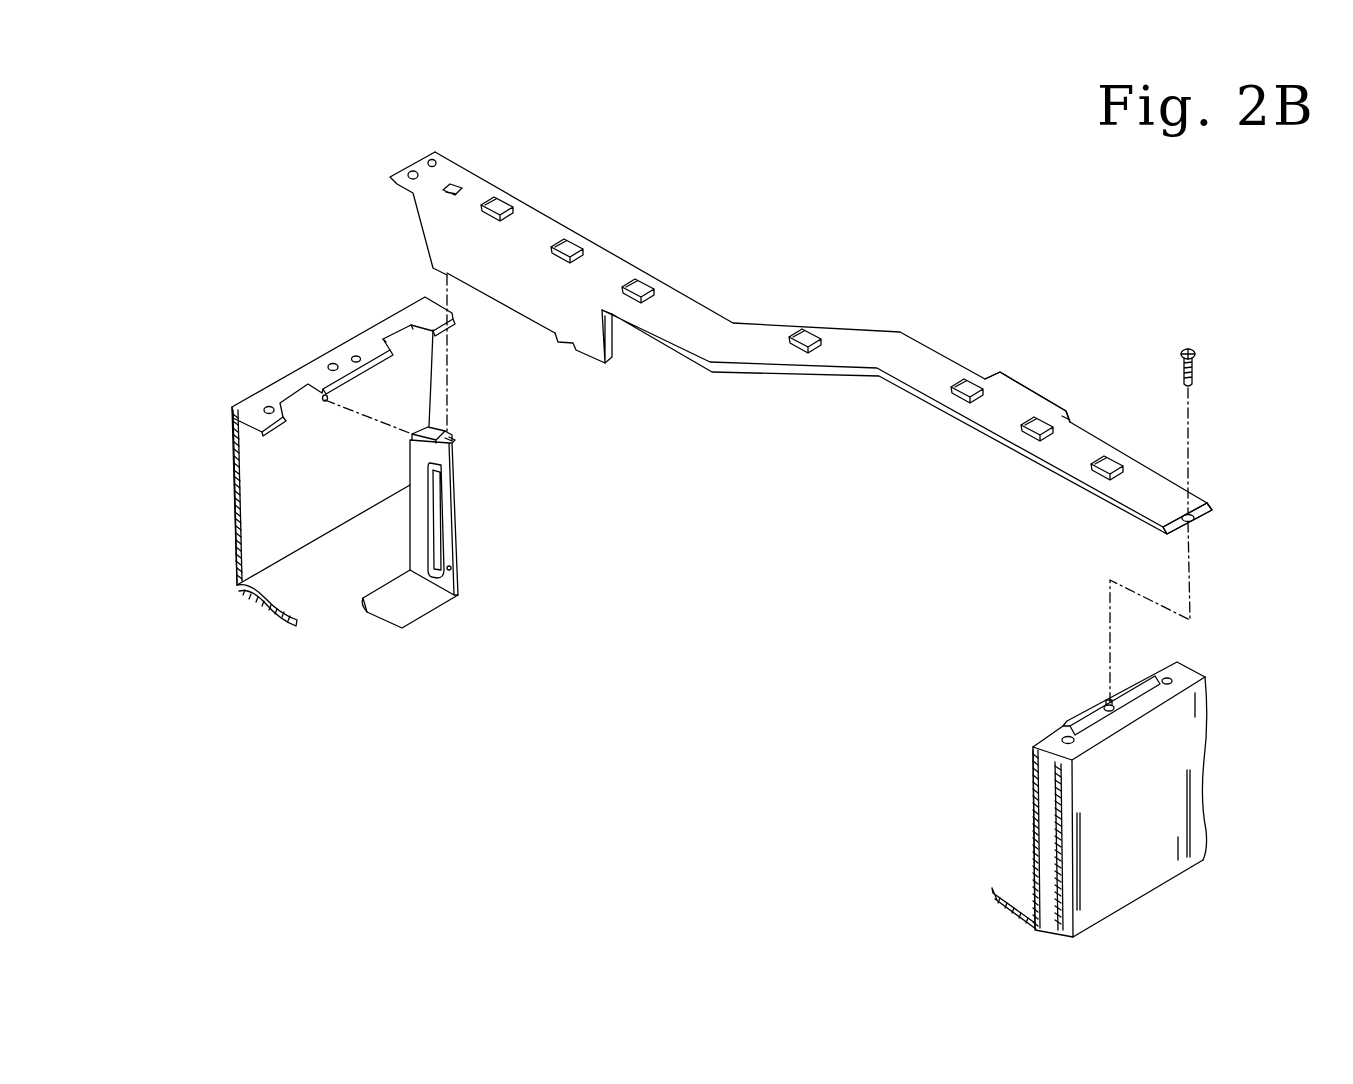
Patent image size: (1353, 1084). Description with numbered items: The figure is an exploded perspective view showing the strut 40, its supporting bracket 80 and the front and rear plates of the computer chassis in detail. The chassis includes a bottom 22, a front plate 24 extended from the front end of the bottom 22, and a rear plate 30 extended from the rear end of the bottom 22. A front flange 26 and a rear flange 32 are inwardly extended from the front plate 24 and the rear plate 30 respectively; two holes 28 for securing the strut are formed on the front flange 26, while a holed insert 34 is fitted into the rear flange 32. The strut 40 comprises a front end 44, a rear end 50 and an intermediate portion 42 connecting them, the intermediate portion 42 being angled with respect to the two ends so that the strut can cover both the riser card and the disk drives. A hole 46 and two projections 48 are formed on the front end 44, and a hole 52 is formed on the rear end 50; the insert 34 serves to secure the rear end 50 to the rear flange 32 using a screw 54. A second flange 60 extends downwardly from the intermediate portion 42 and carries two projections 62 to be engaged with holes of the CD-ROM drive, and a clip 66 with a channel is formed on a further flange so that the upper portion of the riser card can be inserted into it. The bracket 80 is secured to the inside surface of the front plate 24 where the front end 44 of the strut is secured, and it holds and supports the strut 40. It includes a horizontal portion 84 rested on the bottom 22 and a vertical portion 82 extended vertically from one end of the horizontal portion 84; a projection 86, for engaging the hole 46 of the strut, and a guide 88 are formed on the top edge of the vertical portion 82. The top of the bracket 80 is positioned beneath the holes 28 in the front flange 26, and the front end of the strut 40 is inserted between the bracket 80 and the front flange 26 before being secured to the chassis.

The bottom 22 is at (281, 587).
The front plate 24 is at (232, 488).
The front flange 26 is at (303, 381).
The holes 28 is at (356, 354).
The rear plate 30 is at (1147, 857).
The rear flange 32 is at (1053, 741).
The insert 34 is at (1107, 706).
The strut 40 is at (931, 338).
The intermediate portion 42 is at (716, 329).
The front end 44 is at (425, 186).
The hole 46 is at (456, 187).
The projections 48 is at (429, 159).
The rear end 50 is at (1203, 513).
The hole 52 is at (1205, 520).
The screw 54 is at (1196, 366).
The second flange 60 is at (595, 340).
The projections 62 is at (556, 341).
The clip 66 is at (1036, 400).
The bracket 80 is at (421, 528).
The vertical portion 82 is at (455, 552).
The horizontal portion 84 is at (398, 612).
The projection 86 is at (453, 437).
The guide 88 is at (418, 432).